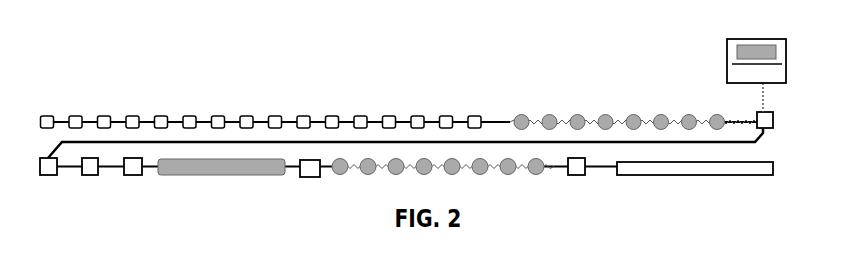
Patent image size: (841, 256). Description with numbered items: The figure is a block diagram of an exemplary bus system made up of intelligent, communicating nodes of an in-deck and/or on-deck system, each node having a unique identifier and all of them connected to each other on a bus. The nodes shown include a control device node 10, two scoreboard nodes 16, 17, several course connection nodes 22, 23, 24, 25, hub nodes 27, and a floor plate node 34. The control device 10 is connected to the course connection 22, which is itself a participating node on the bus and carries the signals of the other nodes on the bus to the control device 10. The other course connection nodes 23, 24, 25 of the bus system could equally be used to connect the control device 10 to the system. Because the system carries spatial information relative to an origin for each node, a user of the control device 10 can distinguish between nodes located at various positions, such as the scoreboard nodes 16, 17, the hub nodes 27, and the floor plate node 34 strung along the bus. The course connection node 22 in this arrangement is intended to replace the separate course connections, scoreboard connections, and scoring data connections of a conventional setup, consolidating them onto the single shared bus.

The control device node 10 is at (757, 52).
The scoreboard node 16 is at (660, 161).
The scoreboard node 17 is at (250, 158).
The course connection node 22 is at (758, 115).
The course connection node 23 is at (52, 158).
The course connection node 24 is at (87, 165).
The course connection node 25 is at (310, 162).
The hub node 27 is at (417, 116).
The floor plate node 34 is at (572, 162).